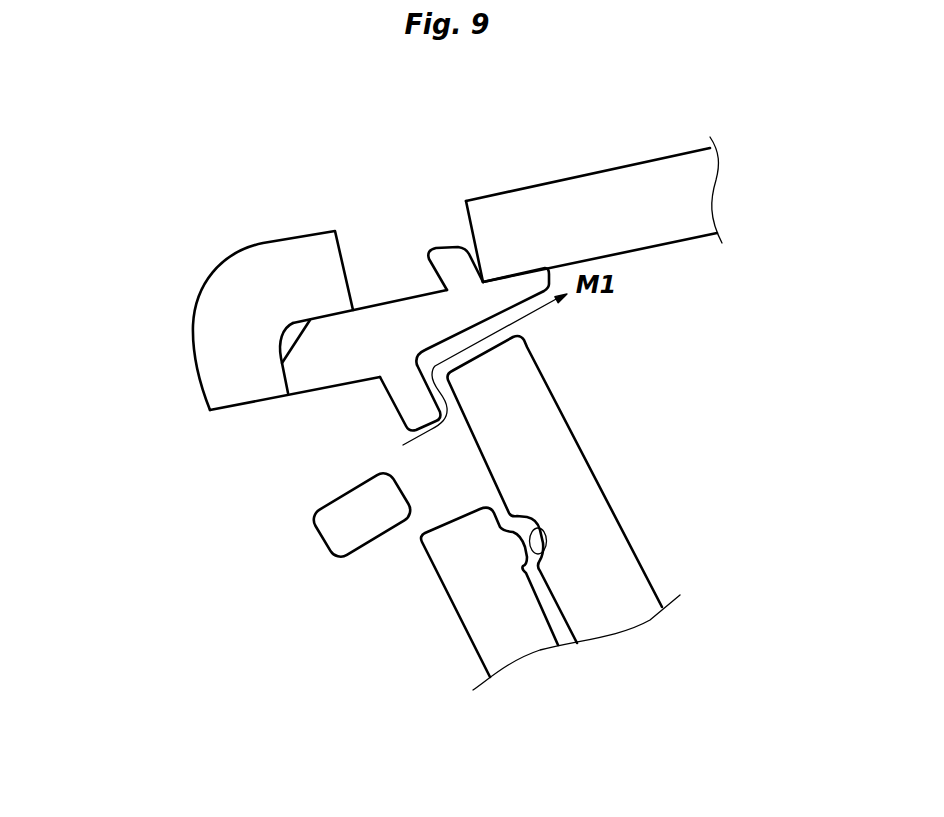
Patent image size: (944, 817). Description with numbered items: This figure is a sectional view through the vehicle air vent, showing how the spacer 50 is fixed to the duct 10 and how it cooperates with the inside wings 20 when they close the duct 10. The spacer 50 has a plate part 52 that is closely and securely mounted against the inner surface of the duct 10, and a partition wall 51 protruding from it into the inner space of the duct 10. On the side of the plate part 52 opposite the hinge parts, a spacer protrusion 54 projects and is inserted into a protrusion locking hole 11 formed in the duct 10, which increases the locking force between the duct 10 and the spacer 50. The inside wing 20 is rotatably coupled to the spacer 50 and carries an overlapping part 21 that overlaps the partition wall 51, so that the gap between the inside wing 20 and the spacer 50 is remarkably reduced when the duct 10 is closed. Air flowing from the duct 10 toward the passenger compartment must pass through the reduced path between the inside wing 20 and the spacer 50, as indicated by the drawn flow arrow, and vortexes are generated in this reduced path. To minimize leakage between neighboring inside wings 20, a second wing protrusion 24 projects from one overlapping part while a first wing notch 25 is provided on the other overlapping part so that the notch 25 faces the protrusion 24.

The duct 10 is at (610, 192).
The protrusion locking hole 11 is at (478, 245).
The inside wing 20 is at (540, 653).
The overlapping part 21 is at (513, 343).
The second wing protrusion 24 is at (520, 545).
The first wing notch 25 is at (545, 555).
The spacer 50 is at (385, 292).
The partition wall 51 is at (403, 398).
The plate part 52 is at (330, 335).
The spacer protrusion 54 is at (440, 257).